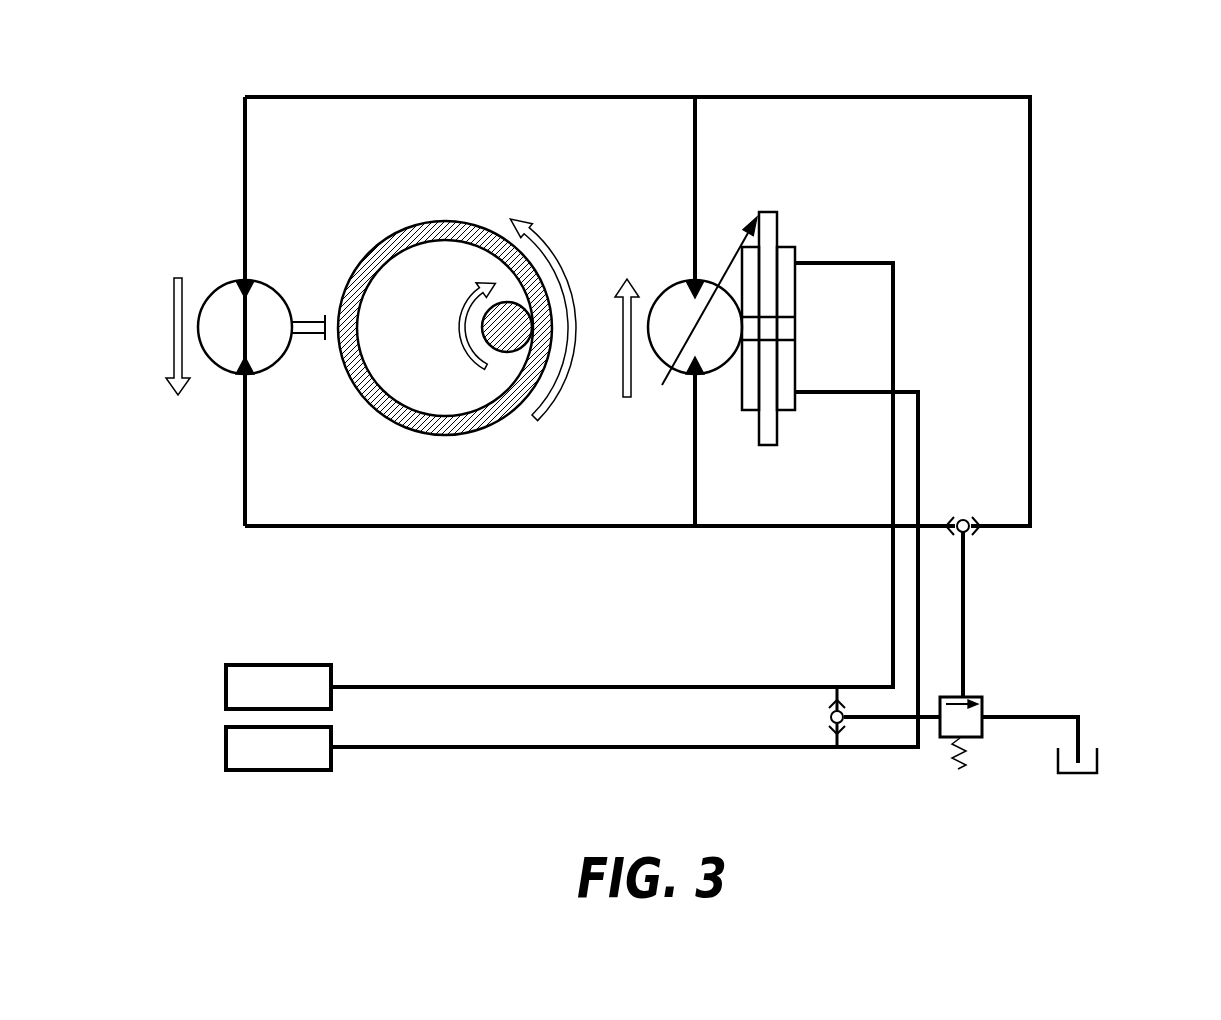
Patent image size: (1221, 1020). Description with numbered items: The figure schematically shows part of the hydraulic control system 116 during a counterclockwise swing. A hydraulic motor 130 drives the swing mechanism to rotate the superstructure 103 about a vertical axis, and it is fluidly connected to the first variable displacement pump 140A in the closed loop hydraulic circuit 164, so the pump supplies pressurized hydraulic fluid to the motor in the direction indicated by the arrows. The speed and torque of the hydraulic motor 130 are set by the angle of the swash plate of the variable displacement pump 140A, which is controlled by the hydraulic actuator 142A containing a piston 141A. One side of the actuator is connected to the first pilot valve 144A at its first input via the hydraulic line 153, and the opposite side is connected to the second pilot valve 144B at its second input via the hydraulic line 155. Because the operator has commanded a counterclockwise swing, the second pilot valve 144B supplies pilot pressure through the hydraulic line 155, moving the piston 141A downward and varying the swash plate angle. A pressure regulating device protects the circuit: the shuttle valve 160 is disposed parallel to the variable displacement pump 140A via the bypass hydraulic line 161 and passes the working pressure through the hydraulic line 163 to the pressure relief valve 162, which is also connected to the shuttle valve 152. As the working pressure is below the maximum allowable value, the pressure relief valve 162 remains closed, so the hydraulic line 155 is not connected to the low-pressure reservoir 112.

The hydraulic control system 116 is at (1068, 110).
The hydraulic circuit 164 is at (214, 138).
The bypass hydraulic line 161 is at (1030, 325).
The superstructure 103 is at (476, 190).
The hydraulic motor 130 is at (268, 284).
The first variable displacement pump 140A is at (673, 283).
The hydraulic actuator 142A is at (787, 246).
The piston 141A is at (786, 328).
The hydraulic line 155 is at (548, 685).
The hydraulic line 153 is at (532, 750).
The shuttle valve 152 is at (830, 719).
The first pilot valve 144A is at (277, 771).
The second pilot valve 144B is at (278, 664).
The shuttle valve 160 is at (968, 534).
The hydraulic line 163 is at (964, 652).
The pressure relief valve 162 is at (973, 739).
The reservoir 112 is at (1098, 760).